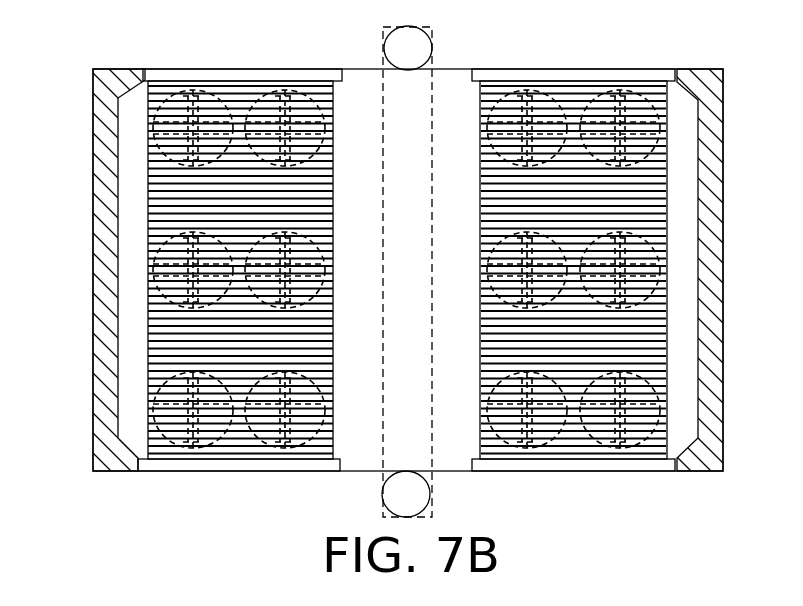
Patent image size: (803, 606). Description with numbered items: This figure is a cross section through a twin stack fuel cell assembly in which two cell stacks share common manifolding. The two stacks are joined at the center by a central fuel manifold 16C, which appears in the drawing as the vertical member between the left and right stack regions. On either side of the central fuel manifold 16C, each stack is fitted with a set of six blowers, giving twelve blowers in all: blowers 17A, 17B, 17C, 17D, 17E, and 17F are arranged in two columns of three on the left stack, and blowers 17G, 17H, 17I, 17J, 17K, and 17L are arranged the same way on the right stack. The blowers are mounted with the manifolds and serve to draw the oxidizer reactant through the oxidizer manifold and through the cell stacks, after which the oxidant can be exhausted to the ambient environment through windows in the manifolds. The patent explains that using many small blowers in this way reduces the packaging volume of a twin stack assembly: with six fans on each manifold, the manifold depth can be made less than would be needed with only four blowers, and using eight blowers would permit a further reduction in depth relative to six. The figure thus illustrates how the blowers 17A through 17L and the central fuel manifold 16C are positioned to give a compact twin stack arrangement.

The central fuel manifold 16C is at (440, 103).
The blower 17A is at (225, 90).
The blower 17B is at (321, 80).
The blower 17C is at (152, 278).
The blower 17D is at (333, 262).
The blower 17E is at (164, 447).
The blower 17F is at (313, 455).
The blower 17G is at (565, 92).
The blower 17H is at (656, 92).
The blower 17I is at (484, 268).
The blower 17J is at (665, 280).
The blower 17K is at (553, 455).
The blower 17L is at (598, 455).